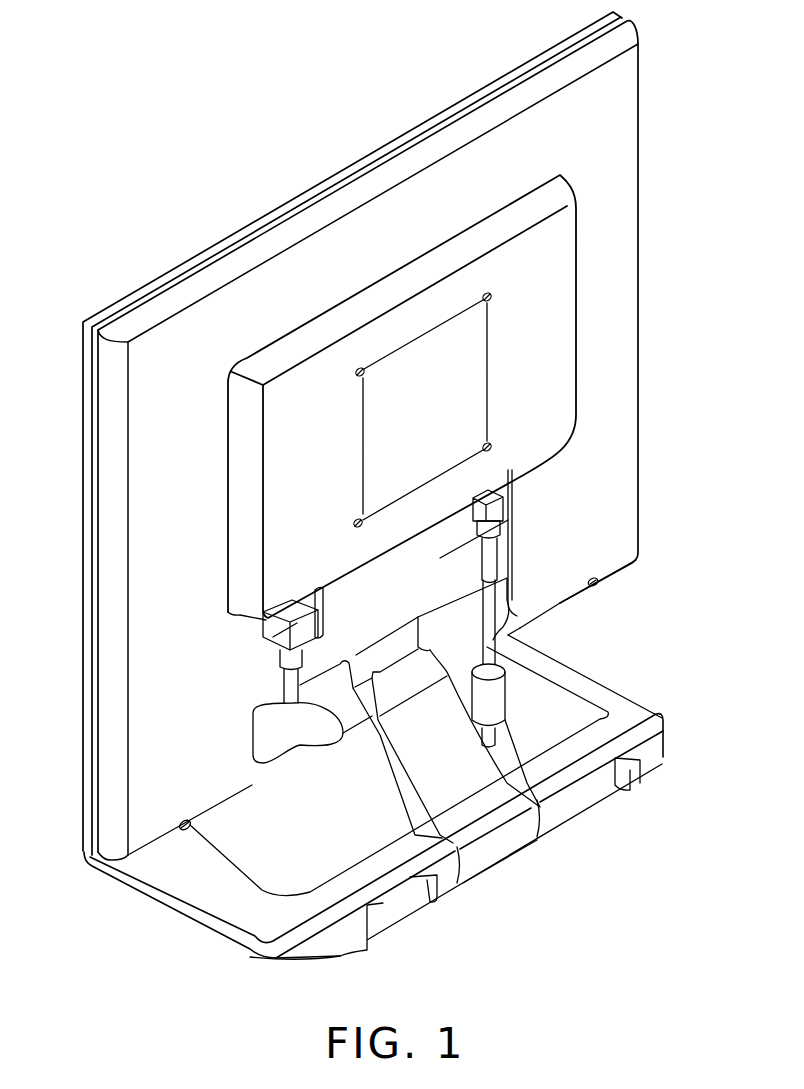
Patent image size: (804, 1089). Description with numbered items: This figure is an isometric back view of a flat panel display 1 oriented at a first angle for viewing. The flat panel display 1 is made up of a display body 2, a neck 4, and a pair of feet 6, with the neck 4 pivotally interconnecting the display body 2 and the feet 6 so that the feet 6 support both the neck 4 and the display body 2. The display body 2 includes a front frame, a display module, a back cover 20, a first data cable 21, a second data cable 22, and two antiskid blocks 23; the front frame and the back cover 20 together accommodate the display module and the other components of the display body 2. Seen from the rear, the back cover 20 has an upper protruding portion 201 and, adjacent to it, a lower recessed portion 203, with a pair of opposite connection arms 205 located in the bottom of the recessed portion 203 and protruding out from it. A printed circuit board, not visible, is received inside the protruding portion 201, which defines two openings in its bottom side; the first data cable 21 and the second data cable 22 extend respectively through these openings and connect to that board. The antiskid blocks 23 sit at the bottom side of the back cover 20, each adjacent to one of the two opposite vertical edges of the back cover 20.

The flat panel display 1 is at (190, 110).
The display body 2 is at (645, 269).
The back cover 20 is at (610, 380).
The upper protruding portion 201 is at (540, 362).
The lower recessed portion 203 is at (440, 558).
The connection arms 205 is at (443, 620).
The first data cable 21 is at (297, 627).
The second data cable 22 is at (497, 701).
The antiskid blocks 23 is at (190, 830).
The neck 4 is at (536, 849).
The feet 6 is at (591, 643).